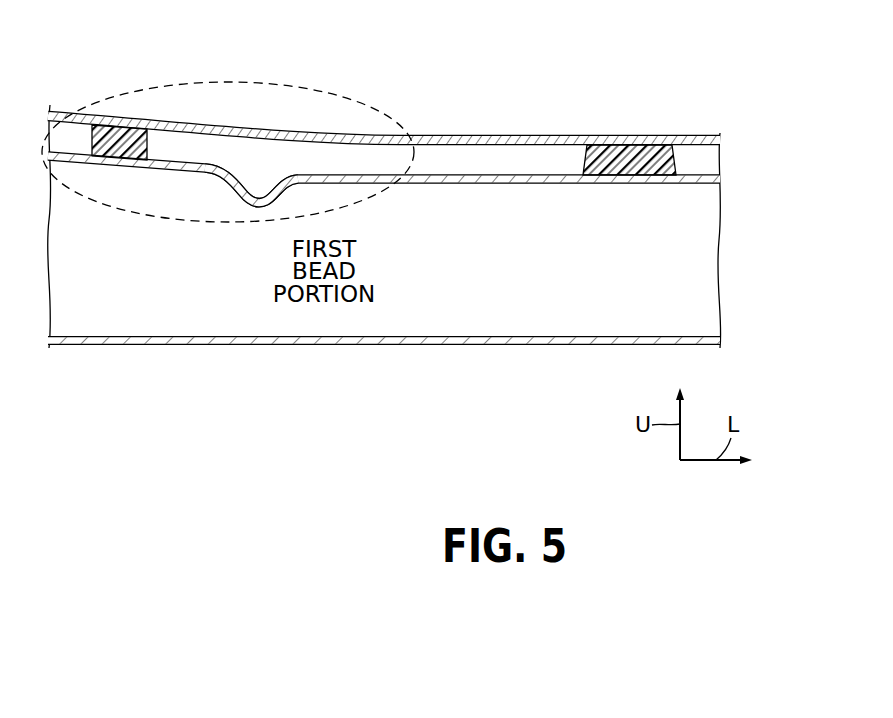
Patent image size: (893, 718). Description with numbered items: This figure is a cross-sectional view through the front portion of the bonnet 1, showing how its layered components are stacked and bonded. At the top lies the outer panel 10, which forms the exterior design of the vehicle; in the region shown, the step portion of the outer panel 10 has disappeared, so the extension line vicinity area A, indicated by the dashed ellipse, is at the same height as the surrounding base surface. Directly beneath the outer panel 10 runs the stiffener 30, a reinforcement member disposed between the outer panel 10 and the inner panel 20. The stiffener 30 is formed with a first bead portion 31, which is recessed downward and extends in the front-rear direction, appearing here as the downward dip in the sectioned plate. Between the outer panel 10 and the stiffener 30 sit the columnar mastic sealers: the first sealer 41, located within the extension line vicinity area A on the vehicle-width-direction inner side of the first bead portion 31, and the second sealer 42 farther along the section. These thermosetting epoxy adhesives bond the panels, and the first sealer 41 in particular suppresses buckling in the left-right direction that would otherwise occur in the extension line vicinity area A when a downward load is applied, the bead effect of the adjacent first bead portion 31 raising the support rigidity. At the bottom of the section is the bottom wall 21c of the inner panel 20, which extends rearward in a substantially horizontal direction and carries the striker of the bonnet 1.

The bonnet 1 is at (542, 80).
The bonnet outer panel 10 is at (466, 133).
The bonnet inner panel 20 is at (384, 380).
The bottom wall 21c is at (268, 345).
The stiffener 30 is at (384, 209).
The first bead portion 31 is at (232, 188).
The first sealer 41 is at (116, 128).
The second sealer 42 is at (632, 155).
The extension line vicinity area A is at (203, 80).